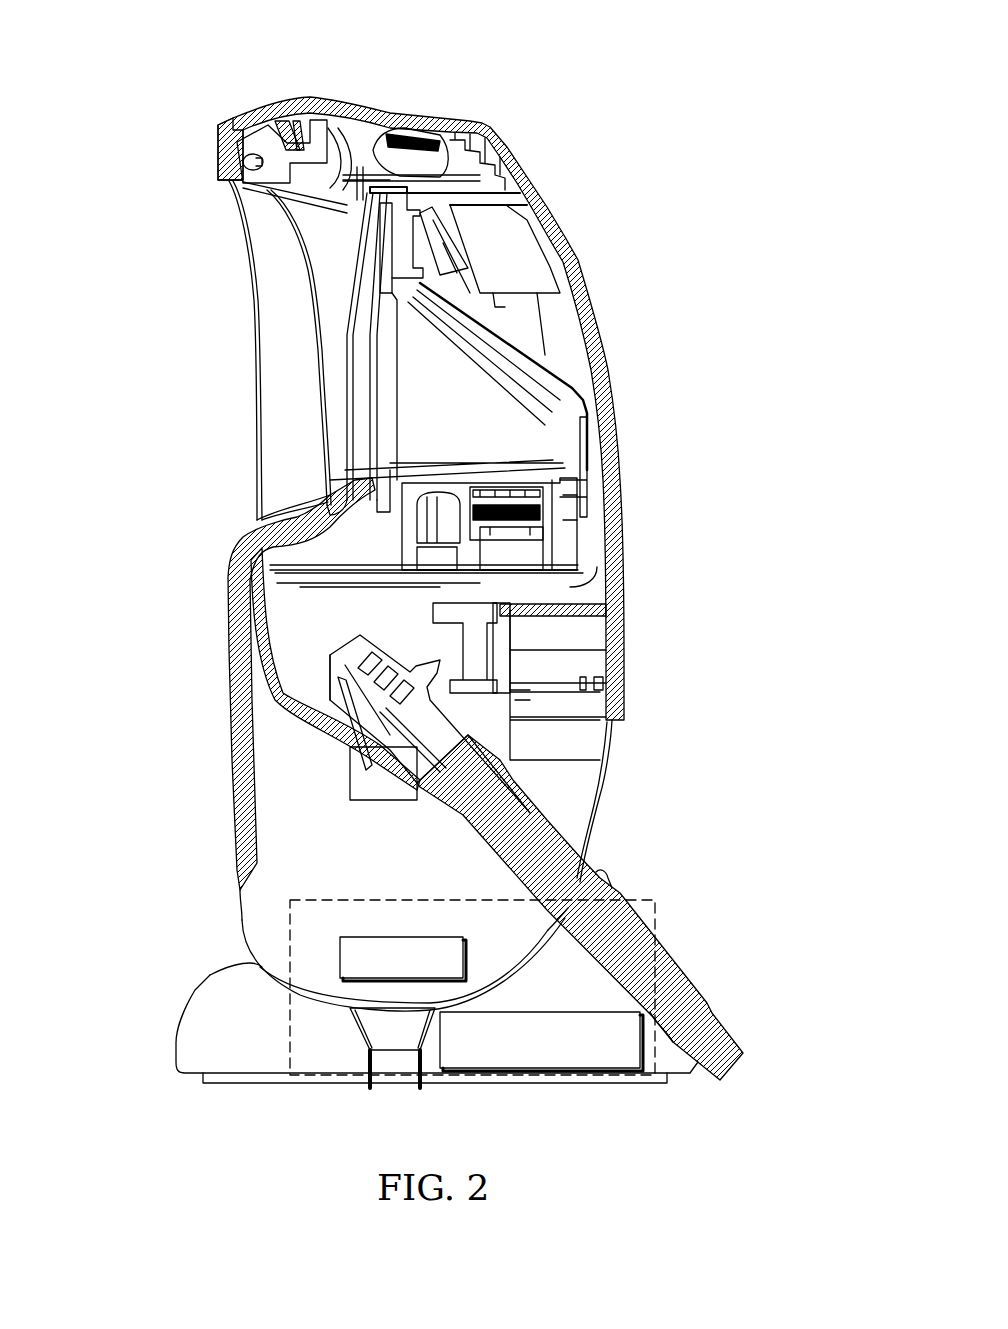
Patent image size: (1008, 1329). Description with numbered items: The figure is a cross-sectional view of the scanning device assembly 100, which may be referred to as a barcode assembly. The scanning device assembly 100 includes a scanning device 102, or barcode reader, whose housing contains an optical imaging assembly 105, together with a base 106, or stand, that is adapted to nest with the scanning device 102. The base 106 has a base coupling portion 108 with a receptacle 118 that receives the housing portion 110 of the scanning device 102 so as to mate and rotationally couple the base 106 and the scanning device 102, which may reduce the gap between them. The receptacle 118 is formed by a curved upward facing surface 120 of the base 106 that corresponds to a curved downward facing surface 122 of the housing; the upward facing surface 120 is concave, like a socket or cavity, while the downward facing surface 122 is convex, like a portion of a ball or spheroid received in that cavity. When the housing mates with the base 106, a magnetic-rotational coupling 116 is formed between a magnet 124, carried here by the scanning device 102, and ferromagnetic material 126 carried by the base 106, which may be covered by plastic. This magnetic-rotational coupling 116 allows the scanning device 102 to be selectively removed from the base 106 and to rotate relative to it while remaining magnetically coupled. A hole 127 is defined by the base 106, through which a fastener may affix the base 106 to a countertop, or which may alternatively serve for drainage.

The scanning device assembly 100 is at (163, 60).
The scanning device 102 is at (222, 158).
The optical imaging assembly 105 is at (470, 410).
The base 106 is at (190, 1060).
The base coupling portion 108 is at (283, 987).
The housing portion 110 is at (253, 927).
The magnetic-rotational coupling 116 is at (313, 900).
The receptacle 118 is at (253, 963).
The upward facing surface 120 is at (520, 970).
The downward facing surface 122 is at (545, 933).
The magnet 124 is at (397, 937).
The ferromagnetic material 126 is at (540, 1071).
The hole 127 is at (370, 1088).